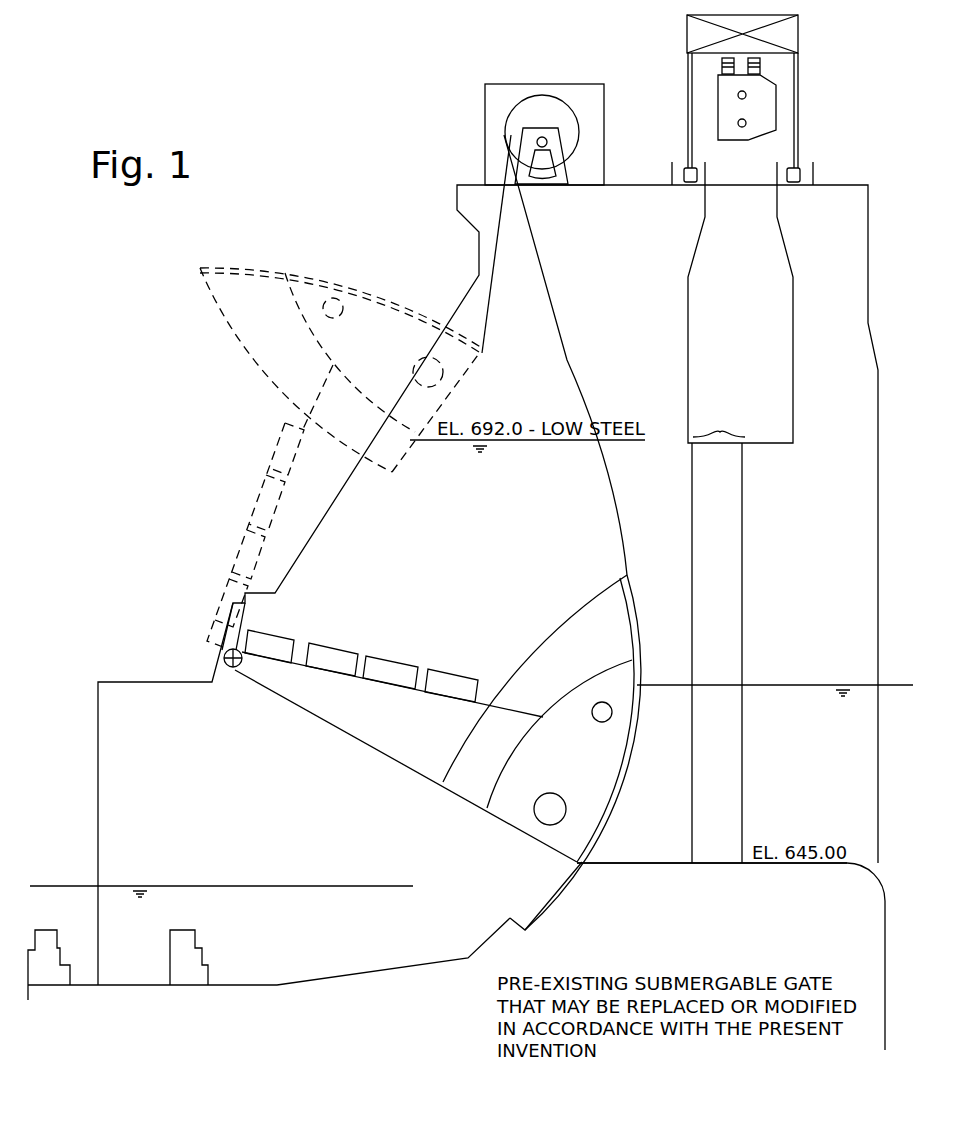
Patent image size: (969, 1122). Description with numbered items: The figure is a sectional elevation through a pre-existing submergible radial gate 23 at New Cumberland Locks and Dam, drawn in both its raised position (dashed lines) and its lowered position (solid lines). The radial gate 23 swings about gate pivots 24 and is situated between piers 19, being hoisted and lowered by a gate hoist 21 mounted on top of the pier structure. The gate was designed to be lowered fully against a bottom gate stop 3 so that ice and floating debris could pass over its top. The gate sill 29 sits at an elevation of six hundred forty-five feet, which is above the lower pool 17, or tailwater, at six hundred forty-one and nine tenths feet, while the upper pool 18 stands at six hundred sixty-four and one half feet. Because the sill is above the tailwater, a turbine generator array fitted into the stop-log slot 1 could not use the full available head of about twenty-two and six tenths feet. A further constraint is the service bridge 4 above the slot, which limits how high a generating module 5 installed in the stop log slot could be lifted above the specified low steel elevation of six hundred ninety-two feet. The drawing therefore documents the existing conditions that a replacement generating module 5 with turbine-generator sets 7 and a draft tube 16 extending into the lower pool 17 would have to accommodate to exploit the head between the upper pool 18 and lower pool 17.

The stop-log slot 1 is at (720, 452).
The bottom gate stop 3 is at (520, 922).
The service bridge 4 is at (782, 36).
The generating module 5 is at (585, 769).
The turbine-generator set 7 is at (557, 847).
The draft tube 16 is at (465, 916).
The lower pool 17 is at (147, 885).
The upper pool 18 is at (893, 684).
The pier 19 is at (165, 791).
The gate hoist 21 is at (517, 131).
The submergible radial gate 23 is at (237, 262).
The gate pivot 24 is at (233, 670).
The gate sill 29 is at (652, 860).